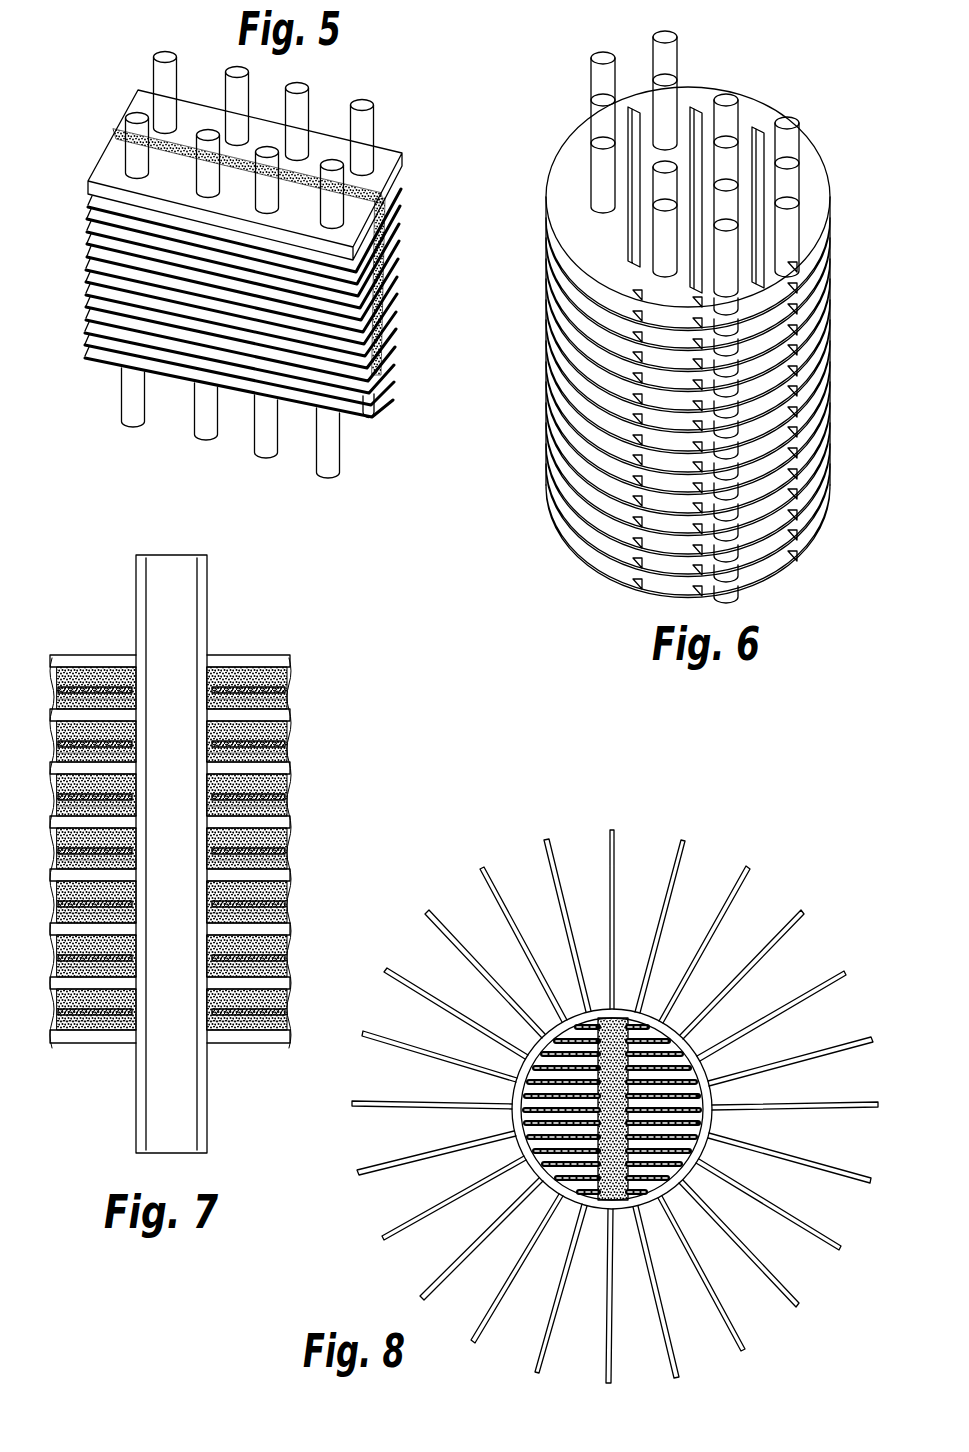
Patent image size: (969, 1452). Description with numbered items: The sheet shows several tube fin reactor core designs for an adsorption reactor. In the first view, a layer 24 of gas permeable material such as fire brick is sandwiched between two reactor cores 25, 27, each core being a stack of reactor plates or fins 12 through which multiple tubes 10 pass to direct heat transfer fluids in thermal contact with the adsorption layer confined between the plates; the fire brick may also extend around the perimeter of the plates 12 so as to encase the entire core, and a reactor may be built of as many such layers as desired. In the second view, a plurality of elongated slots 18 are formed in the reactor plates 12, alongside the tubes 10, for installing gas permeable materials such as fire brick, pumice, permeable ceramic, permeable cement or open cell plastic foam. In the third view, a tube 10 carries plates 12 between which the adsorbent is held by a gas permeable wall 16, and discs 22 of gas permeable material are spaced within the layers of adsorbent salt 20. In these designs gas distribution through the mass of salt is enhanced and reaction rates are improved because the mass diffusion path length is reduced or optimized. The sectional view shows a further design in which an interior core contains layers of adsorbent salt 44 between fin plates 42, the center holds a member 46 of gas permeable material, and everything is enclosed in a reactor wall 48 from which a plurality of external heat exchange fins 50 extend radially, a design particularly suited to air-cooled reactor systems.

In FIG. 5, the tube 10 is at (352, 107).
In FIG. 6, the tube 10 is at (598, 53).
In FIG. 7, the tube 10 is at (207, 573).
In FIG. 5, the reactor plate 12 is at (388, 148).
In FIG. 6, the reactor plate 12 is at (557, 147).
In FIG. 7, the reactor plate 12 is at (276, 867).
In FIG. 7, the gas permeable wall 16 is at (288, 673).
In FIG. 6, the elongated slot 18 is at (634, 107).
In FIG. 7, the layer of adsorbent salt 20 is at (288, 732).
In FIG. 7, the disc of gas permeable material 22 is at (288, 800).
In FIG. 5, the layer of gas permeable material 24 is at (112, 128).
In FIG. 5, the reactor core 25 is at (402, 228).
In FIG. 5, the reactor core 27 is at (249, 252).
In FIG. 8, the fin plate 42 is at (652, 1050).
In FIG. 8, the layer of adsorbent salt 44 is at (683, 1053).
In FIG. 8, the member of gas permeable material 46 is at (607, 1020).
In FIG. 8, the reactor wall 48 is at (773, 1262).
In FIG. 8, the external heat exchange fin 50 is at (773, 1288).